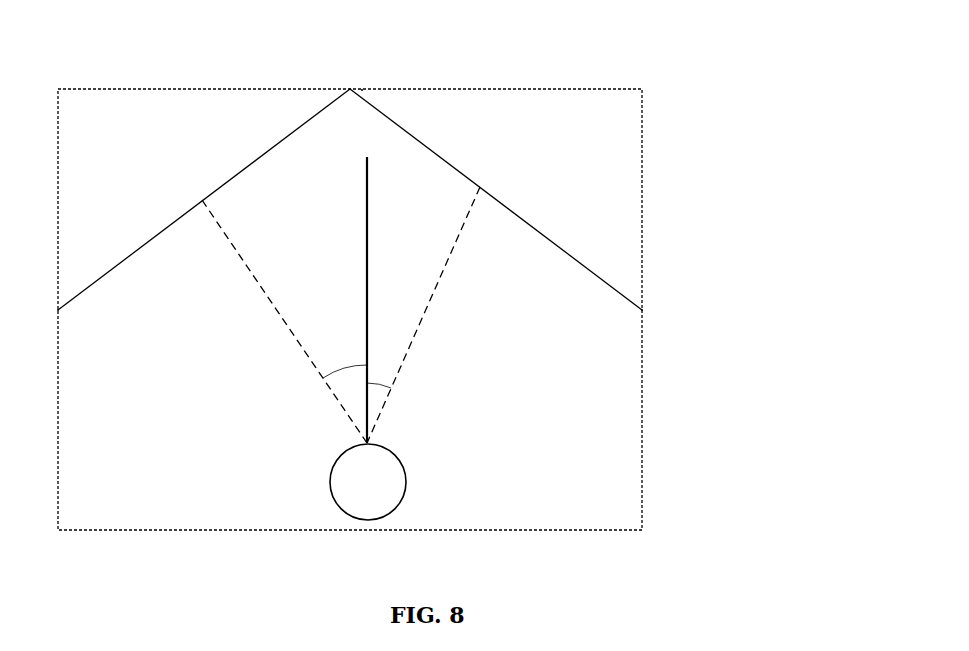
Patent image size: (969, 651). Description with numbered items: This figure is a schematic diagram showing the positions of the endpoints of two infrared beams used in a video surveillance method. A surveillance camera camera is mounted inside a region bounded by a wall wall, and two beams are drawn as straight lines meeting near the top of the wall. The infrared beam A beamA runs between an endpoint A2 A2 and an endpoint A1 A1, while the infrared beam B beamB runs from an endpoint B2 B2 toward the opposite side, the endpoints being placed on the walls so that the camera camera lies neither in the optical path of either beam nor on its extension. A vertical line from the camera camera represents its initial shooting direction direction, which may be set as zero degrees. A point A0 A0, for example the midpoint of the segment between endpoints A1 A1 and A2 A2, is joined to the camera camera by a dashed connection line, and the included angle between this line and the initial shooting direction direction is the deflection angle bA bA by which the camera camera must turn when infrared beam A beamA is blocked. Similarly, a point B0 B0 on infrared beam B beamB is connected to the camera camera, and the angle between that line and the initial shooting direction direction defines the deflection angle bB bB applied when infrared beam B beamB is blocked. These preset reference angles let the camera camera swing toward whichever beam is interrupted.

The element wall is at (642, 476).
The infrared beam A beamA is at (107, 270).
The infrared beam B beamB is at (620, 228).
The initial shooting direction is at (408, 300).
The element camera is at (368, 482).
The point A0 is at (202, 200).
The point B0 is at (480, 187).
The deflection angle bA is at (344, 357).
The deflection angle bB is at (384, 363).
The endpoint A2 is at (350, 89).
The endpoint B2 is at (447, 52).
The endpoint A1 is at (58, 310).